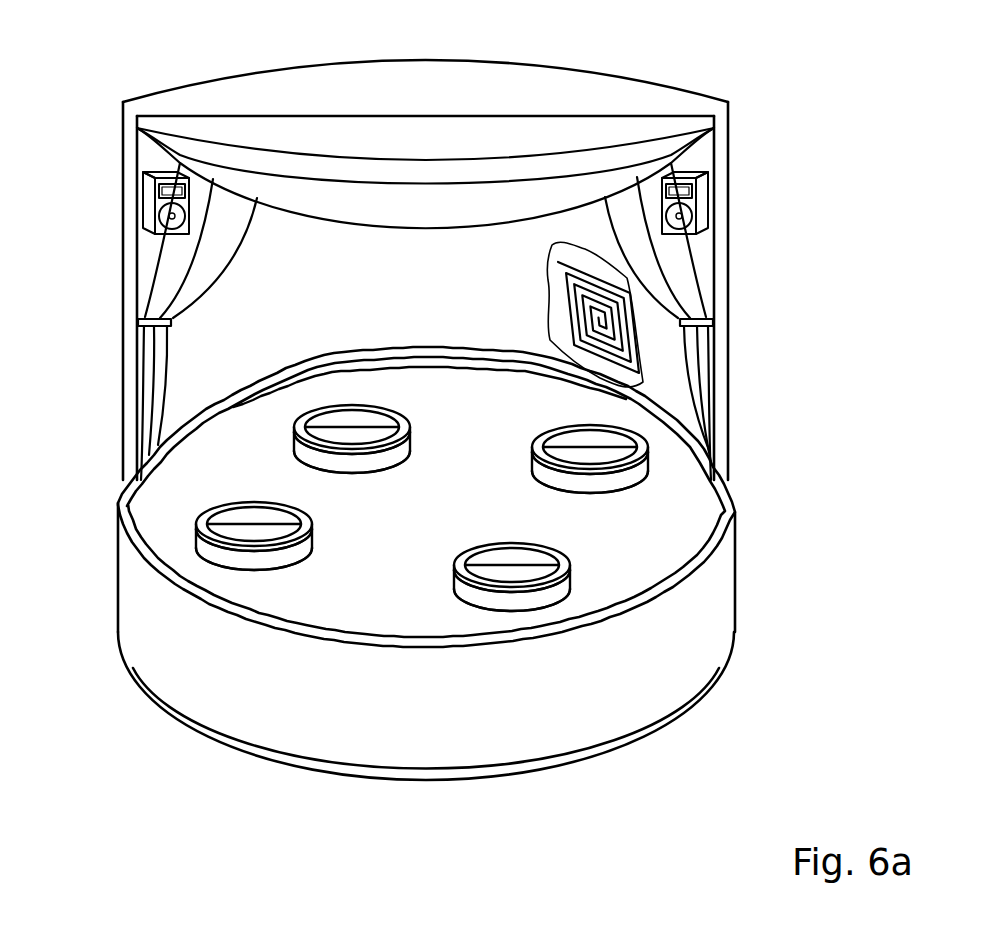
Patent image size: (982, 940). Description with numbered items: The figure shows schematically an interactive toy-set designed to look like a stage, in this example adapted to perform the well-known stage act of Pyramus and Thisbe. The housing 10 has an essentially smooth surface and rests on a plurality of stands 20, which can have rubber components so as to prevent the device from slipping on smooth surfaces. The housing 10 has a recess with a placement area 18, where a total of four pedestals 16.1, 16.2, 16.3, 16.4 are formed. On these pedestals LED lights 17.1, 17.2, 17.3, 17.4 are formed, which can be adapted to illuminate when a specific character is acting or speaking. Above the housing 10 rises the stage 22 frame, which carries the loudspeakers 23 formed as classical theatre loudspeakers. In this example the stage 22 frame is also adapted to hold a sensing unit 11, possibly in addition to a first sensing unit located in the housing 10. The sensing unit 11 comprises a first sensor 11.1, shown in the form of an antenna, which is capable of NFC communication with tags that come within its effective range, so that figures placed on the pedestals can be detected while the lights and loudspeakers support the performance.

The housing 10 is at (698, 605).
The sensing unit 11 is at (588, 266).
The first sensor 11.1 is at (633, 355).
The pedestal 16.1 is at (248, 557).
The pedestal 16.2 is at (347, 463).
The pedestal 16.3 is at (600, 490).
The pedestal 16.4 is at (506, 606).
The LED light 17.1 is at (263, 520).
The LED light 17.2 is at (363, 418).
The LED light 17.3 is at (590, 453).
The LED light 17.4 is at (507, 560).
The placement area 18 is at (650, 532).
The stands 20 is at (202, 730).
The stage frame 22 is at (275, 130).
The loudspeakers 23 is at (693, 205).